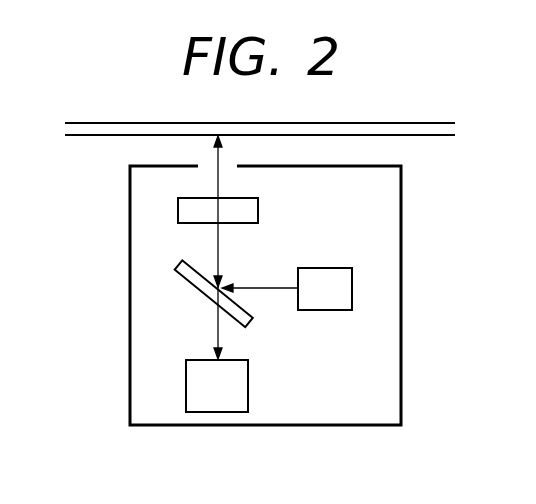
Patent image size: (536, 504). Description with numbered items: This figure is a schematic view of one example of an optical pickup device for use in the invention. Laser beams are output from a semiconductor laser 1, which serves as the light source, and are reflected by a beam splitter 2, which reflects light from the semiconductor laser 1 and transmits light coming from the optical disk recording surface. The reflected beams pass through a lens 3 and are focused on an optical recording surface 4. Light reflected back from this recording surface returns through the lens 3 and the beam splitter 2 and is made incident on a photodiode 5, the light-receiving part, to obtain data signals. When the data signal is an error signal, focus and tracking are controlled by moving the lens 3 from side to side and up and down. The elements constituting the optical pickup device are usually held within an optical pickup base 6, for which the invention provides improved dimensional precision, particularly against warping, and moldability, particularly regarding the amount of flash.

The semiconductor laser 1 is at (330, 266).
The beam splitter 2 is at (197, 289).
The lens 3 is at (258, 210).
The optical recording surface 4 is at (107, 136).
The photodiode 5 is at (248, 375).
The optical pickup base 6 is at (401, 218).